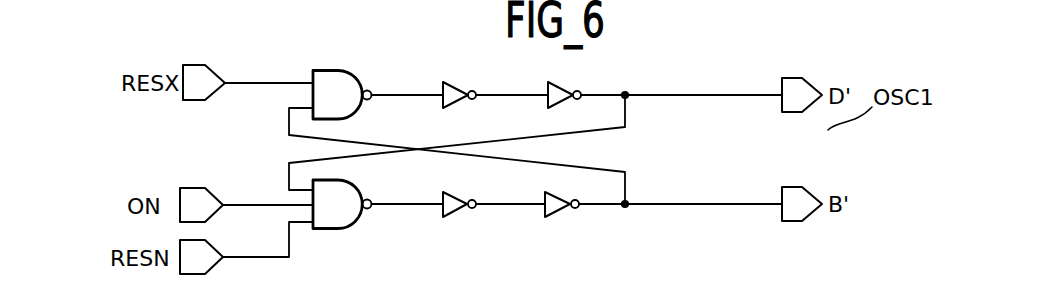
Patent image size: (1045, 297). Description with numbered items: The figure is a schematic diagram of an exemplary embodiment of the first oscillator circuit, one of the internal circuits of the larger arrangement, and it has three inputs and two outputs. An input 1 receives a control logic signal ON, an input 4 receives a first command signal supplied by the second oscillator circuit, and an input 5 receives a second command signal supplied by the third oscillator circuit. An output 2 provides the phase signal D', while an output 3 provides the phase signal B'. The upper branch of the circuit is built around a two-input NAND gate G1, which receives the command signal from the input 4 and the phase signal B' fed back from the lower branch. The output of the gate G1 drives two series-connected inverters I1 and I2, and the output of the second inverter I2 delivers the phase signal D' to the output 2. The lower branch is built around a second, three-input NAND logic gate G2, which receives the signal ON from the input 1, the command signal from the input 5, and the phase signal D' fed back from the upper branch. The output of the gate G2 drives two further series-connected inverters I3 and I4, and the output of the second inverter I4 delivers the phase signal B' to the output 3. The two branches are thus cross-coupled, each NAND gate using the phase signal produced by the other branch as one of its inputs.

The input 1 is at (193, 188).
The output 2 is at (793, 78).
The output 3 is at (790, 222).
The input 4 is at (203, 65).
The input 5 is at (212, 267).
The two-input NAND gate G1 is at (346, 70).
The three-input NAND logic gate G2 is at (345, 229).
The inverter I1 is at (457, 80).
The inverter I2 is at (563, 80).
The inverter I3 is at (457, 212).
The inverter I4 is at (560, 212).